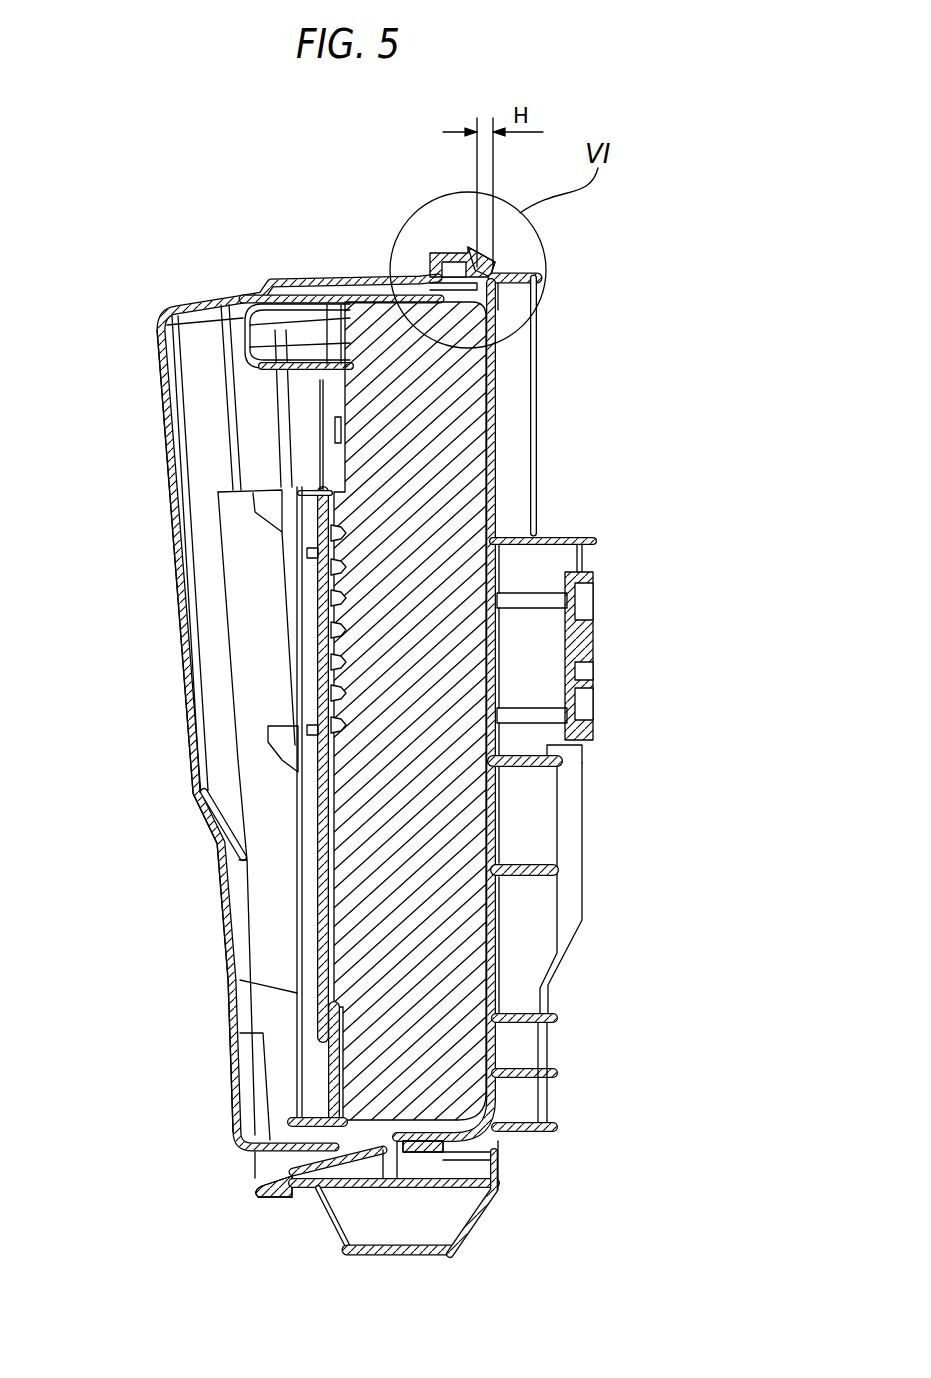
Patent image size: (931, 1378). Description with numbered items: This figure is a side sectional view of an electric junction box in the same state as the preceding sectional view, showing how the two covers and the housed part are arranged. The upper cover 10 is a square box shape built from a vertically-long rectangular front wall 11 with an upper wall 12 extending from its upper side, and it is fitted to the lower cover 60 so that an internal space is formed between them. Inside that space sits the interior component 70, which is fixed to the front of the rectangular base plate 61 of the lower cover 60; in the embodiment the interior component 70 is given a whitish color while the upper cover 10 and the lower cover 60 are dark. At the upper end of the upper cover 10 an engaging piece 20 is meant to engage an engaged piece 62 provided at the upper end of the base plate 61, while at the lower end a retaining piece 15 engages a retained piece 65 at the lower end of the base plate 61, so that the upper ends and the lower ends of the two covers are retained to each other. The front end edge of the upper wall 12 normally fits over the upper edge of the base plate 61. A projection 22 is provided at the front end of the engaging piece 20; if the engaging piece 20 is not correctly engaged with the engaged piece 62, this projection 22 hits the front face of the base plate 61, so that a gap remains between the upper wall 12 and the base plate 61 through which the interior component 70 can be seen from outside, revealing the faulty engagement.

The upper cover 10 is at (165, 528).
The front wall 11 is at (180, 656).
The upper wall 12 is at (318, 279).
The retaining piece 15 is at (247, 1198).
The engaging piece 20 is at (450, 257).
The projection 22 is at (492, 268).
The lower cover 60 is at (523, 711).
The base plate 61 is at (497, 302).
The engaged piece 62 is at (527, 273).
The retained piece 65 is at (389, 1150).
The interior component 70 is at (440, 498).